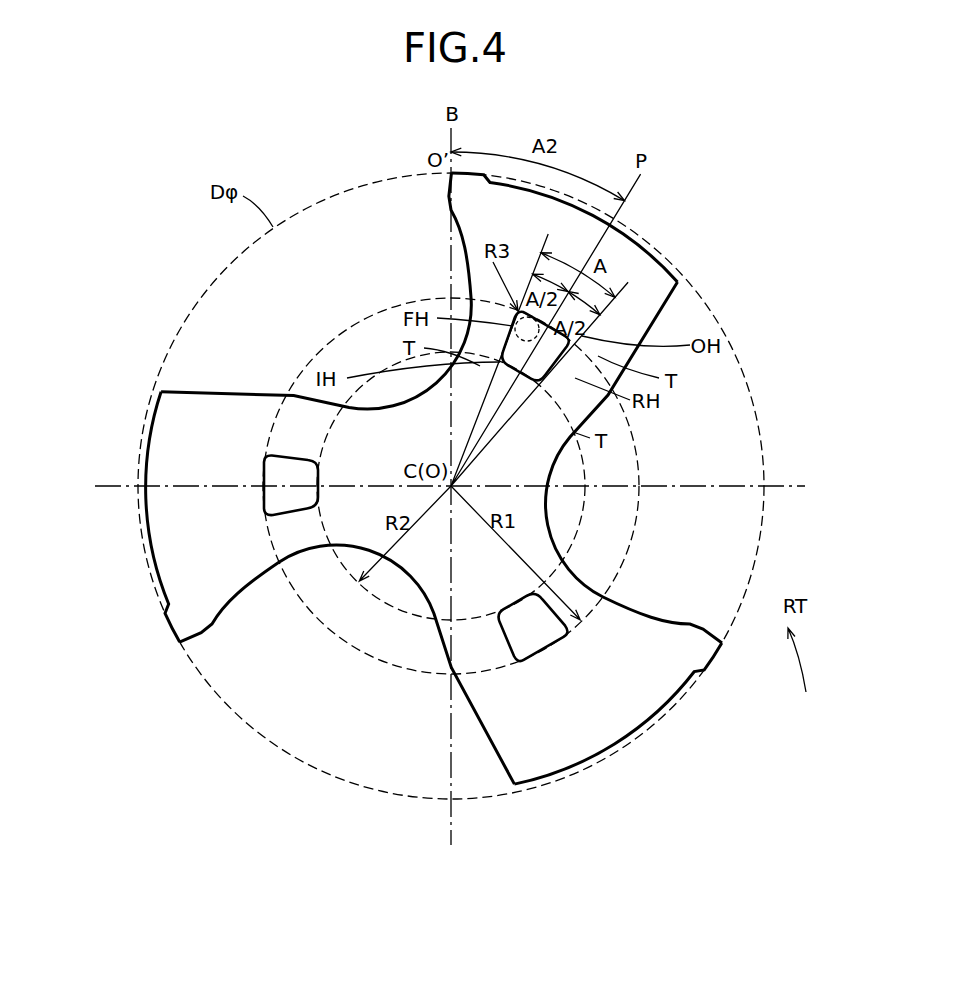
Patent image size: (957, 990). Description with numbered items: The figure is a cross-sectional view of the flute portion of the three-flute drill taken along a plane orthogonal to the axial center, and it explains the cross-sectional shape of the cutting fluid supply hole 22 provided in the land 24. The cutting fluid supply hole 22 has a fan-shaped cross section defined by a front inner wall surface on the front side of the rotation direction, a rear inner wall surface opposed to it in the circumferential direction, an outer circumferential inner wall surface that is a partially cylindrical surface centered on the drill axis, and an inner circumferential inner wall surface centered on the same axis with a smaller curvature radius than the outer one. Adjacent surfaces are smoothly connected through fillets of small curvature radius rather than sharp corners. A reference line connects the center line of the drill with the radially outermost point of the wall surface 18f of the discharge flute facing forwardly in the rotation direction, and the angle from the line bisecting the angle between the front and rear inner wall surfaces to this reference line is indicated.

The land 24 is at (650, 268).
The wall surface facing forwardly in the rotation direction 18f is at (466, 255).
The cutting fluid supply hole 22 is at (265, 496).